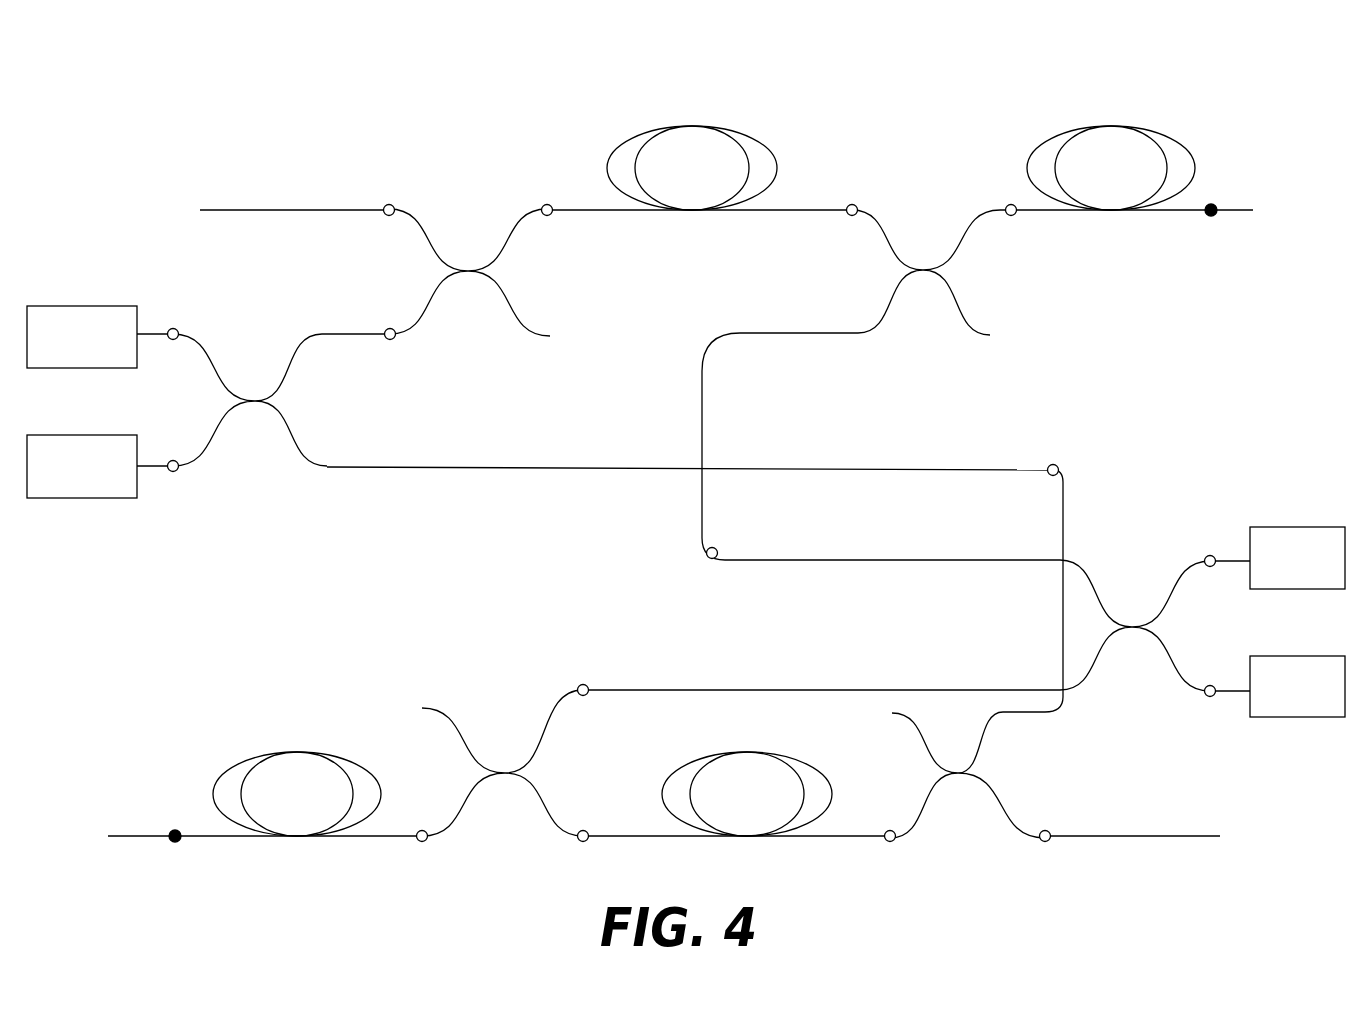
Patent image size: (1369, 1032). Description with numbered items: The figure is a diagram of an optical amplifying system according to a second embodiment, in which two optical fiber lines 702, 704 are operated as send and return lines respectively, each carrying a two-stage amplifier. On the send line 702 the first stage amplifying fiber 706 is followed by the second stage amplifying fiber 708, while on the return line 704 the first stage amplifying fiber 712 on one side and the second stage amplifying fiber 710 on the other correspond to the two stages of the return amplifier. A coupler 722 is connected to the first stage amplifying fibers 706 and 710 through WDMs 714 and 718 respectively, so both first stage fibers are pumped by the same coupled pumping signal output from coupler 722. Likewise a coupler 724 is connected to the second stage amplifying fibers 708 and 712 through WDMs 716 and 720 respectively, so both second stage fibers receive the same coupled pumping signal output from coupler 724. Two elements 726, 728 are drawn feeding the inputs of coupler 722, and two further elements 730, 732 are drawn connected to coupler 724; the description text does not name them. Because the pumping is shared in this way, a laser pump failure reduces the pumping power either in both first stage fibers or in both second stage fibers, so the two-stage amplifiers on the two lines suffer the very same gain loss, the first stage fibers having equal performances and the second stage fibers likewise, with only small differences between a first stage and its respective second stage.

The optical fiber line 702 is at (287, 209).
The optical fiber line 704 is at (130, 835).
The first stage amplifying fiber 706 is at (683, 127).
The second stage amplifying fiber 708 is at (1108, 128).
The first stage amplifying fiber 710 is at (772, 753).
The second stage amplifying fiber 712 is at (293, 753).
The WDM 714 is at (465, 258).
The WDM 716 is at (922, 260).
The WDM 718 is at (958, 790).
The WDM 720 is at (505, 785).
The coupler 722 is at (250, 390).
The coupler 724 is at (1123, 610).
The light source 726 is at (85, 317).
The light source 728 is at (92, 492).
The detector 730 is at (1277, 535).
The detector 732 is at (1288, 710).